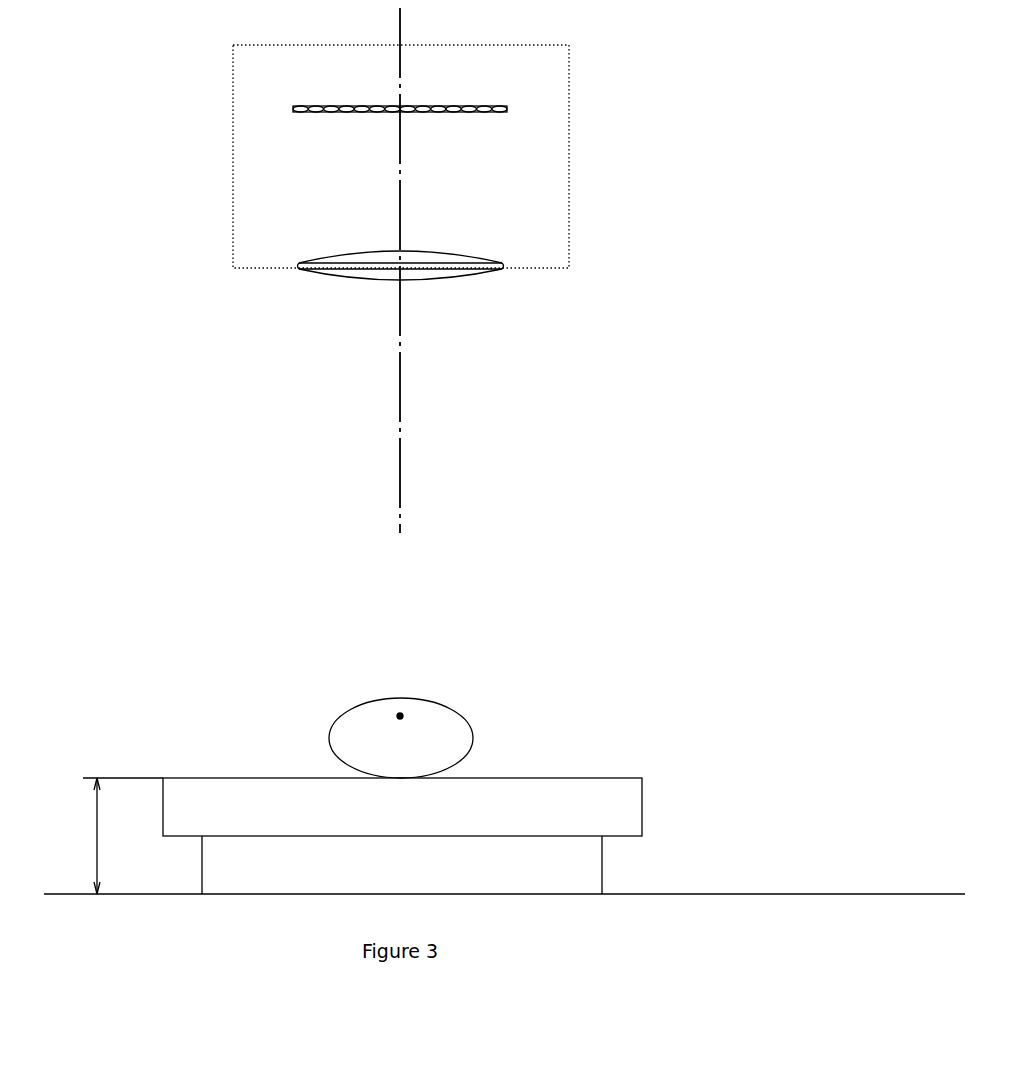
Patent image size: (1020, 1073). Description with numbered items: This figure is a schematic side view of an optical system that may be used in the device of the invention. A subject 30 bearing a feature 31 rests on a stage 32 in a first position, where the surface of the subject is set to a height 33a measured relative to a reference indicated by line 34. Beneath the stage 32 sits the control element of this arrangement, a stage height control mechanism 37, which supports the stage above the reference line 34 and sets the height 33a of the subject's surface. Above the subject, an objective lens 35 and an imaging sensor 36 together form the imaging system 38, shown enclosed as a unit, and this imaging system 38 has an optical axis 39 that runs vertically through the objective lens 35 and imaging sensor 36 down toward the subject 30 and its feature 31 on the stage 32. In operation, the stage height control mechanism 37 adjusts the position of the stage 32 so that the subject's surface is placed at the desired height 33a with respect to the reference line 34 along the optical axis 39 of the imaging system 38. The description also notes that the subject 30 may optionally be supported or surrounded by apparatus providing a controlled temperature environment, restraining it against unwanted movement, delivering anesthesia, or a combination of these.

The subject 30 is at (445, 700).
The feature 31 is at (403, 720).
The stage 32 is at (576, 776).
The height 33a is at (121, 836).
The reference line 34 is at (867, 890).
The objective lens 35 is at (465, 282).
The imaging sensor 36 is at (468, 115).
The stage height control mechanism 37 is at (603, 862).
The imaging system 38 is at (571, 216).
The optical axis 39 is at (402, 470).